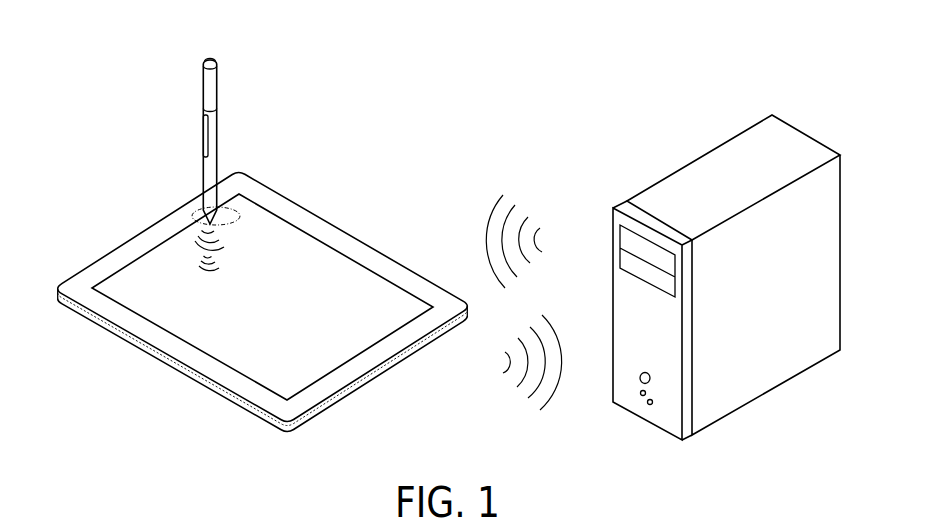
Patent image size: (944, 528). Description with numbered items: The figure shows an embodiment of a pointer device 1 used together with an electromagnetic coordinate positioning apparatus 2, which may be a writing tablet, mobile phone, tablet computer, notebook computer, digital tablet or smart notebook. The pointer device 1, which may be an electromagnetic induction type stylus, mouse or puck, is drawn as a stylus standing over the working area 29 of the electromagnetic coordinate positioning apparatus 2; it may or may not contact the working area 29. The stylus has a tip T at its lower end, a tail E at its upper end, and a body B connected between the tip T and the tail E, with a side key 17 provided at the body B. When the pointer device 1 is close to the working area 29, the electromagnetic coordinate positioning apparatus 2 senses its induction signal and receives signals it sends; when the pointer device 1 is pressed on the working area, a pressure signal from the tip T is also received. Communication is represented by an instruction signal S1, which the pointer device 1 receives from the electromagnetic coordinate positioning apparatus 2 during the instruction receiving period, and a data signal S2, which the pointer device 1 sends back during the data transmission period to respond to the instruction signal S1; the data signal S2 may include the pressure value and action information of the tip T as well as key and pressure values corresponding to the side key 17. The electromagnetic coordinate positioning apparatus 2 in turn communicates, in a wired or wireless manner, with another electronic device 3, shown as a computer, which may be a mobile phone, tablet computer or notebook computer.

The pointer device 1 is at (204, 88).
The electromagnetic coordinate positioning apparatus 2 is at (359, 250).
The electronic device 3 is at (658, 193).
The side key 17 is at (203, 137).
The working area 29 is at (297, 240).
The tail E is at (211, 60).
The body B is at (218, 110).
The tip T is at (240, 213).
The instruction signal S1 is at (204, 254).
The data signal S2 is at (200, 222).